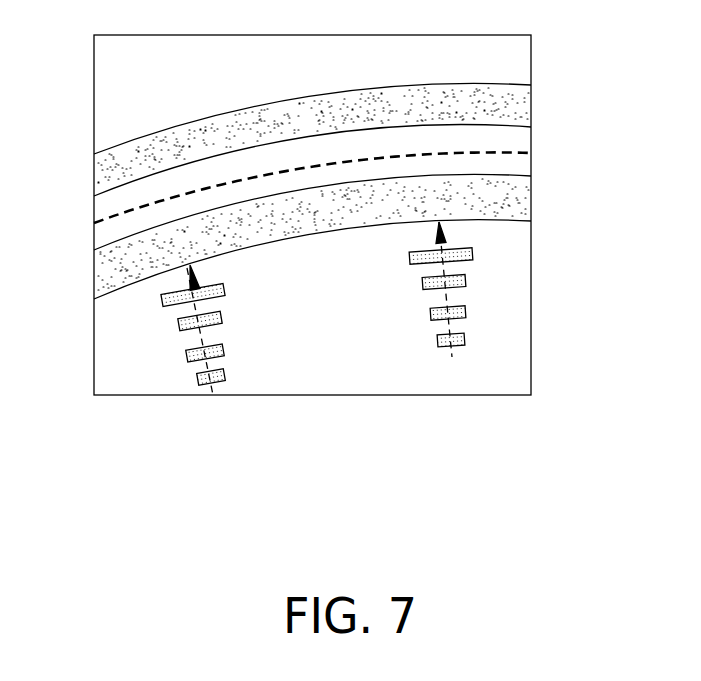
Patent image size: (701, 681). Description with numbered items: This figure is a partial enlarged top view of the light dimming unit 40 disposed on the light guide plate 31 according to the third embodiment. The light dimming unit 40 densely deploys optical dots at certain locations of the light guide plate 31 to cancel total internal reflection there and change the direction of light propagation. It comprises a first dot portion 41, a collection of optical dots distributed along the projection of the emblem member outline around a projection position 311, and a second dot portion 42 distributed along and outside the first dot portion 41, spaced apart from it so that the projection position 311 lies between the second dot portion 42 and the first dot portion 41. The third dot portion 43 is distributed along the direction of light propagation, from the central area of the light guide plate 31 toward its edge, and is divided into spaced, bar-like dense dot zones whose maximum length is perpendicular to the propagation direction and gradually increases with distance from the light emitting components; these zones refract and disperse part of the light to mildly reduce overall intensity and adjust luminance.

The light guide plate 31 is at (512, 328).
The light dimming unit 40 is at (353, 238).
The first dot portion 41 is at (510, 196).
The second dot portion 42 is at (510, 108).
The third dot portion 43 is at (388, 308).
The projection position 311 is at (177, 197).